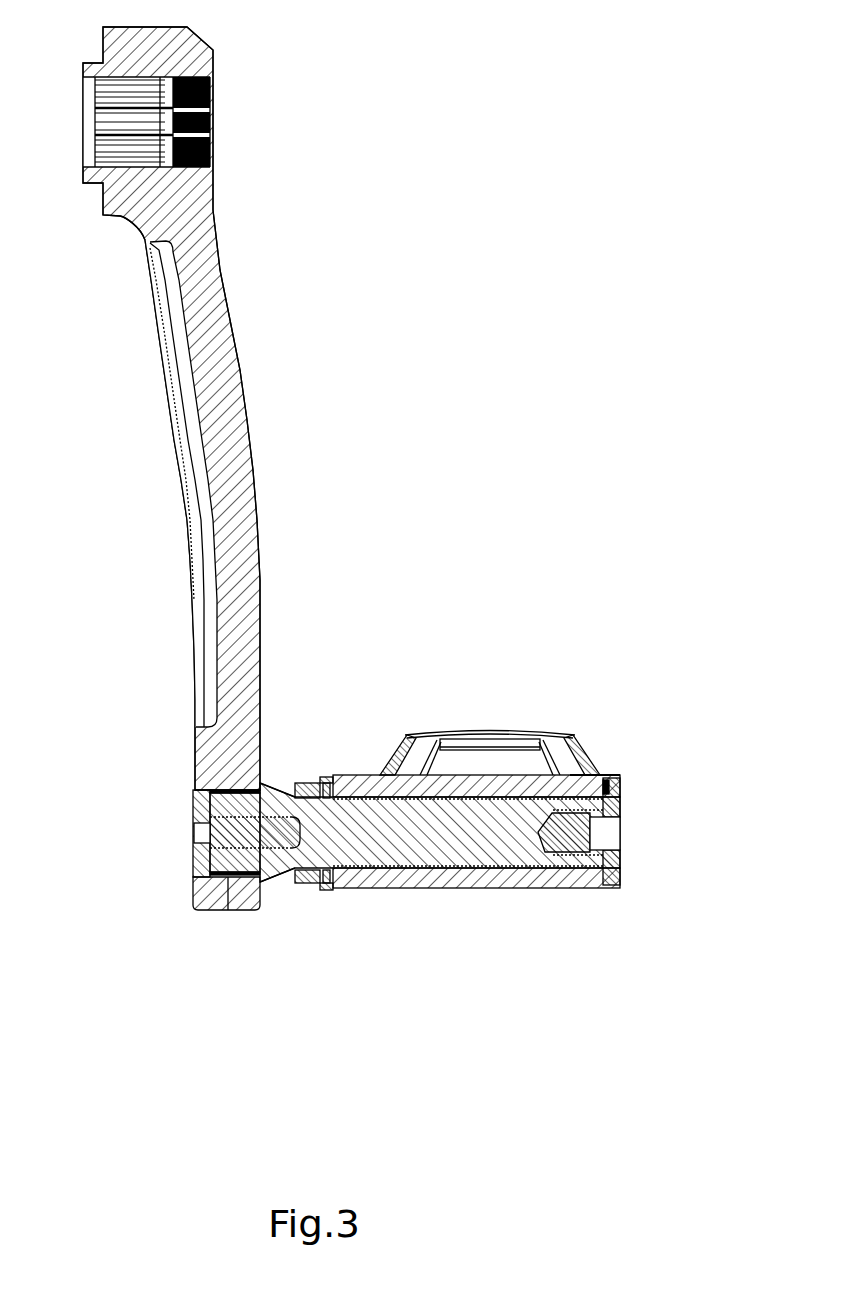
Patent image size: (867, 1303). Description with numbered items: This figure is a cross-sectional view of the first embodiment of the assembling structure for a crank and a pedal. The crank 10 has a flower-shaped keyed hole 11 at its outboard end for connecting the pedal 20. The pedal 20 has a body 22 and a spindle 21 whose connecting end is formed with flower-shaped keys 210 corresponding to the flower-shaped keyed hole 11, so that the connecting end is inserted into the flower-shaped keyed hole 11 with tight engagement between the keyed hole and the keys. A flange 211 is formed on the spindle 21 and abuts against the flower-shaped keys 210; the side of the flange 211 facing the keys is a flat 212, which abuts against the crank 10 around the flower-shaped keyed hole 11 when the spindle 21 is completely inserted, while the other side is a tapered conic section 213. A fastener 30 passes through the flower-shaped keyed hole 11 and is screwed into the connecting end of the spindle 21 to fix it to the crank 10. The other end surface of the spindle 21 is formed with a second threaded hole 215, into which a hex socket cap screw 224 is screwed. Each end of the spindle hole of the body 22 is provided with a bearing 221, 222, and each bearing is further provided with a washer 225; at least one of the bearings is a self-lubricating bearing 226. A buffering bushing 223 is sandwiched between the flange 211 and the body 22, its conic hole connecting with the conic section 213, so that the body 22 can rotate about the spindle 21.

The crank 10 is at (257, 442).
The flower-shaped keyed hole 11 is at (260, 913).
The pedal 20 is at (452, 727).
The spindle 21 is at (447, 852).
The body 22 is at (558, 737).
The fastener 30 is at (210, 835).
The flower-shaped keys 210 is at (228, 905).
The flange 211 is at (267, 883).
The flat 212 is at (262, 787).
The tapered conic section 213 is at (275, 883).
The second threaded hole 215 is at (570, 838).
The bearing 221 is at (345, 776).
The bearing 222 is at (572, 775).
The buffering bushing 223 is at (310, 883).
The hex socket cap screw 224 is at (620, 815).
The washer 225 is at (327, 780).
The self-lubricating bearing 226 is at (413, 795).